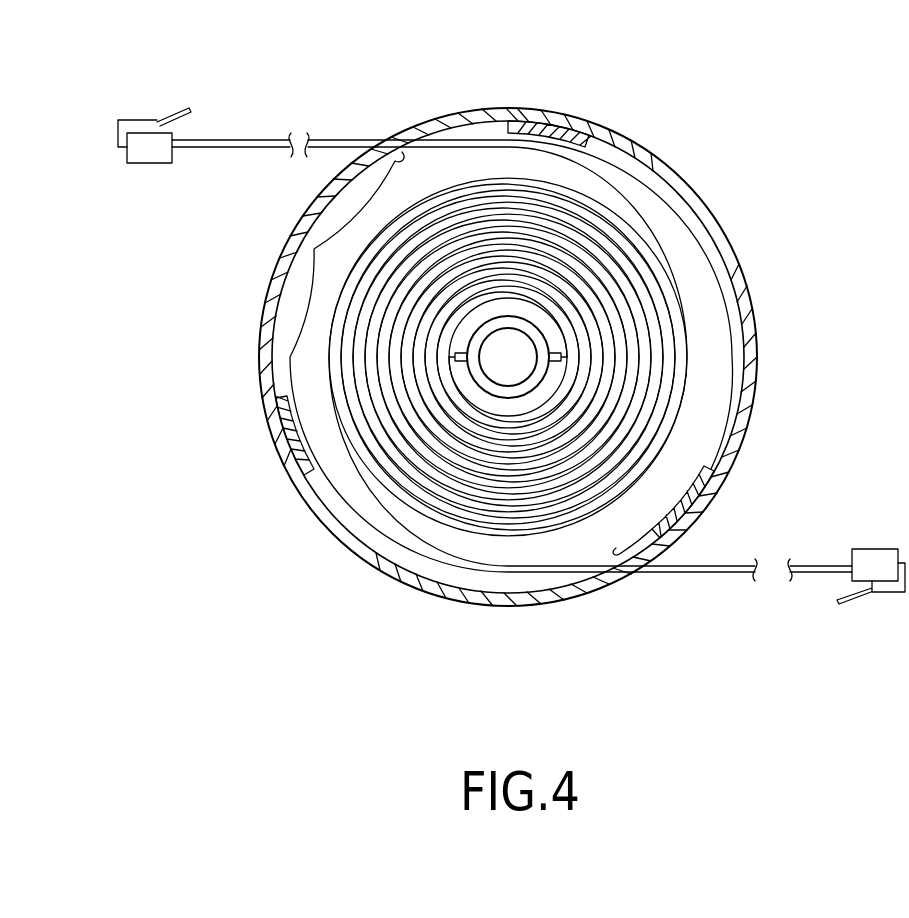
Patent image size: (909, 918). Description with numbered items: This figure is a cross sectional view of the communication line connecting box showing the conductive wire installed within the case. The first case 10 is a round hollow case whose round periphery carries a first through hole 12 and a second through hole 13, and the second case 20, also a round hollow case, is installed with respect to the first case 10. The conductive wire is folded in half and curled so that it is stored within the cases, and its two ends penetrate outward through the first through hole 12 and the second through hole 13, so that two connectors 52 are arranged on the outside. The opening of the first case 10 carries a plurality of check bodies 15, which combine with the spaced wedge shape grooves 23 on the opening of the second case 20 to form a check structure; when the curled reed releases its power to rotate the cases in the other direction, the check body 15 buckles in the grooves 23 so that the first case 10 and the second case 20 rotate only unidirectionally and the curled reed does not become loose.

The first case 10 is at (285, 304).
The first through hole 12 is at (408, 150).
The second through hole 13 is at (610, 562).
The check body 15 is at (587, 122).
The second case 20 is at (687, 182).
The wedge shape groove 23 is at (555, 113).
The connector 52 is at (152, 147).